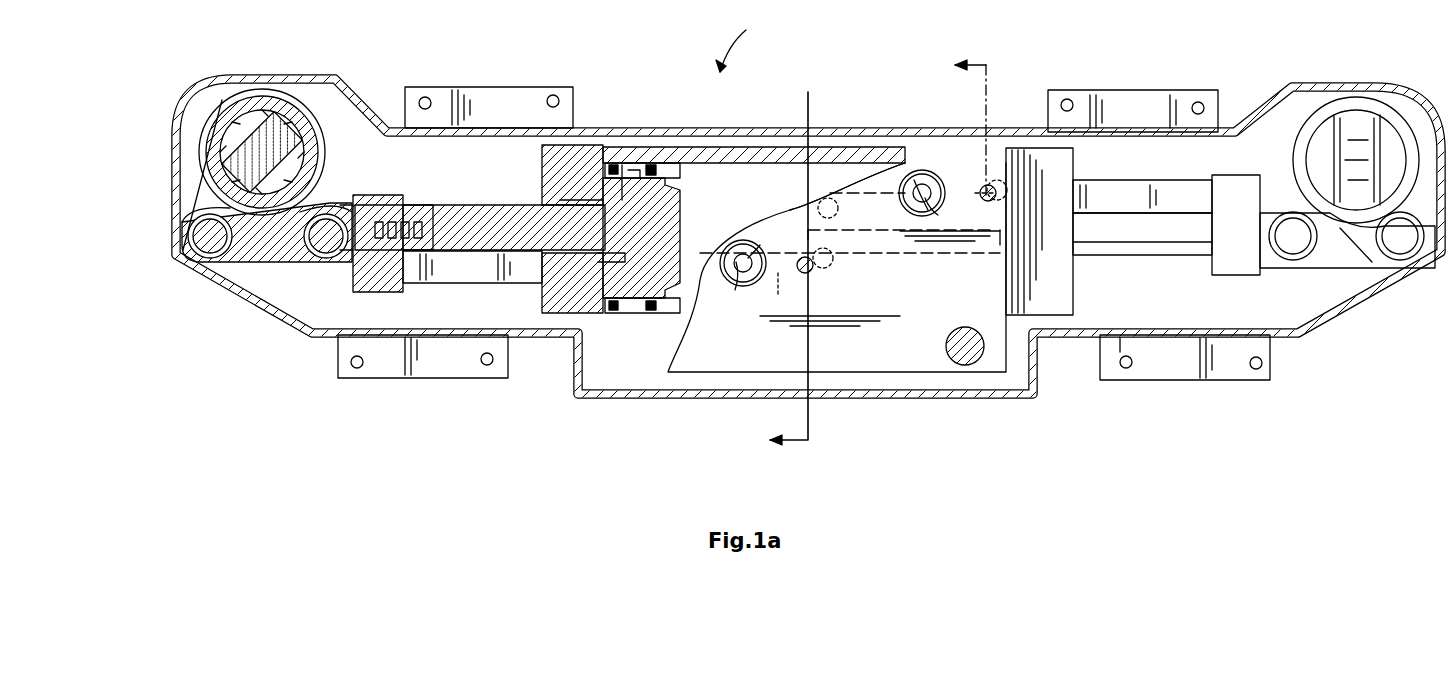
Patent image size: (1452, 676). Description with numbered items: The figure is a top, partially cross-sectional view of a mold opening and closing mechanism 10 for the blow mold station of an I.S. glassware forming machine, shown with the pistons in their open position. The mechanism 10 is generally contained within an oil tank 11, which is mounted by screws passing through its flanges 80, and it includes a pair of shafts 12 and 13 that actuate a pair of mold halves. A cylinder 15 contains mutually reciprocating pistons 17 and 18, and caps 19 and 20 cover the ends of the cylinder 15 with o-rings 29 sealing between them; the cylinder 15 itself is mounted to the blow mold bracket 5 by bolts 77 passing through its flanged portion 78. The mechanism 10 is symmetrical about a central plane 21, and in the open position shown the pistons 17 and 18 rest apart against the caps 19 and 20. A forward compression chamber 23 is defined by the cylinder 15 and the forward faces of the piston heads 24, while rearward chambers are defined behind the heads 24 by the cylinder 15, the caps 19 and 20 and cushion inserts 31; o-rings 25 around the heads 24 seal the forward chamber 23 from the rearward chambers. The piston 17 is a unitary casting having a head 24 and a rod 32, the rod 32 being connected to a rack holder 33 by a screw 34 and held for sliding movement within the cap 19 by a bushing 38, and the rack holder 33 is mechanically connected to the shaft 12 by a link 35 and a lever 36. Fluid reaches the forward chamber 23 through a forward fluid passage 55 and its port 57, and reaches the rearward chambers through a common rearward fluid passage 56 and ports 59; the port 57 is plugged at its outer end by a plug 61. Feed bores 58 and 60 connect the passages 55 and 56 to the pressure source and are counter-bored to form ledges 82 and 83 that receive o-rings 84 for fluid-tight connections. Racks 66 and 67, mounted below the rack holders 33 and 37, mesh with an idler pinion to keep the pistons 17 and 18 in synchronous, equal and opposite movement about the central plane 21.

The mold opening and closing mechanism 10 is at (745, 40).
The oil tank 11 is at (708, 128).
The shaft 12 is at (266, 100).
The shaft 13 is at (1356, 100).
The cylinder 15 is at (752, 147).
The piston 17 is at (530, 207).
The piston 18 is at (1116, 258).
The cap 19 is at (584, 145).
The cap 20 is at (1032, 148).
The central plane 21 is at (815, 100).
The forward compression chamber 23 is at (862, 175).
The head 24 is at (675, 215).
The o-ring 25 is at (650, 163).
The o-ring 29 is at (616, 163).
The cushion insert 31 is at (612, 282).
The rod 32 is at (487, 209).
The rack holder 33 is at (365, 195).
The screw 34 is at (397, 200).
The link 35 is at (262, 262).
The lever 36 is at (190, 182).
The rack holder 37 is at (1232, 175).
The bushing 38 is at (572, 283).
The blow mold bracket 5 is at (846, 252).
The forward fluid passage 55 is at (793, 294).
The common rearward fluid passage 56 is at (850, 211).
The port 57 is at (833, 252).
The feed bore 58 is at (738, 240).
The port 59 is at (980, 188).
The feed bore 60 is at (912, 172).
The plug 61 is at (808, 273).
The rack 66 is at (480, 284).
The rack 67 is at (1158, 180).
The bolt 77 is at (962, 362).
The flanged portion 78 is at (886, 368).
The flange 80 is at (1170, 95).
The ledge 82 is at (735, 290).
The ledge 83 is at (925, 170).
The o-ring 84 is at (856, 228).